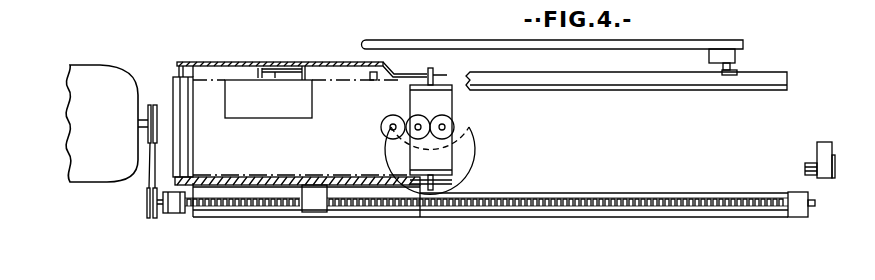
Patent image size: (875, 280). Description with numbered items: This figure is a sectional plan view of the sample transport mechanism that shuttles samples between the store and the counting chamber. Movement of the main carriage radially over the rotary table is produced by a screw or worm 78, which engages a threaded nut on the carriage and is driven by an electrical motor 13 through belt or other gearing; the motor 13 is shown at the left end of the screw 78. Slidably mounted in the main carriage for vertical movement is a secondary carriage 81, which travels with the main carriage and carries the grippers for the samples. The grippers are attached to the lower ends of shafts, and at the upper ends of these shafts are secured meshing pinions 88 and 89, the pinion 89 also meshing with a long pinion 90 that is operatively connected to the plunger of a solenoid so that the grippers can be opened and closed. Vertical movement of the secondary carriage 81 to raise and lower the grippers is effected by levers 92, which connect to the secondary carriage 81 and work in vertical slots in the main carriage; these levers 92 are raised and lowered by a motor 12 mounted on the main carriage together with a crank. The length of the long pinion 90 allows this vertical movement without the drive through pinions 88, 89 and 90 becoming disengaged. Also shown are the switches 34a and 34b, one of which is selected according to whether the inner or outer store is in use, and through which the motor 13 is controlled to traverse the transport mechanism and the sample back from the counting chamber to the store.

The motor 12 is at (259, 113).
The electrical motor 13 is at (88, 180).
The switch 34a is at (738, 31).
The switch 34b is at (817, 158).
The screw or worm 78 is at (592, 186).
The secondary carriage 81 is at (447, 165).
The pinion 88 is at (452, 127).
The pinion 89 is at (417, 133).
The long pinion 90 is at (384, 118).
The levers 92 is at (264, 50).